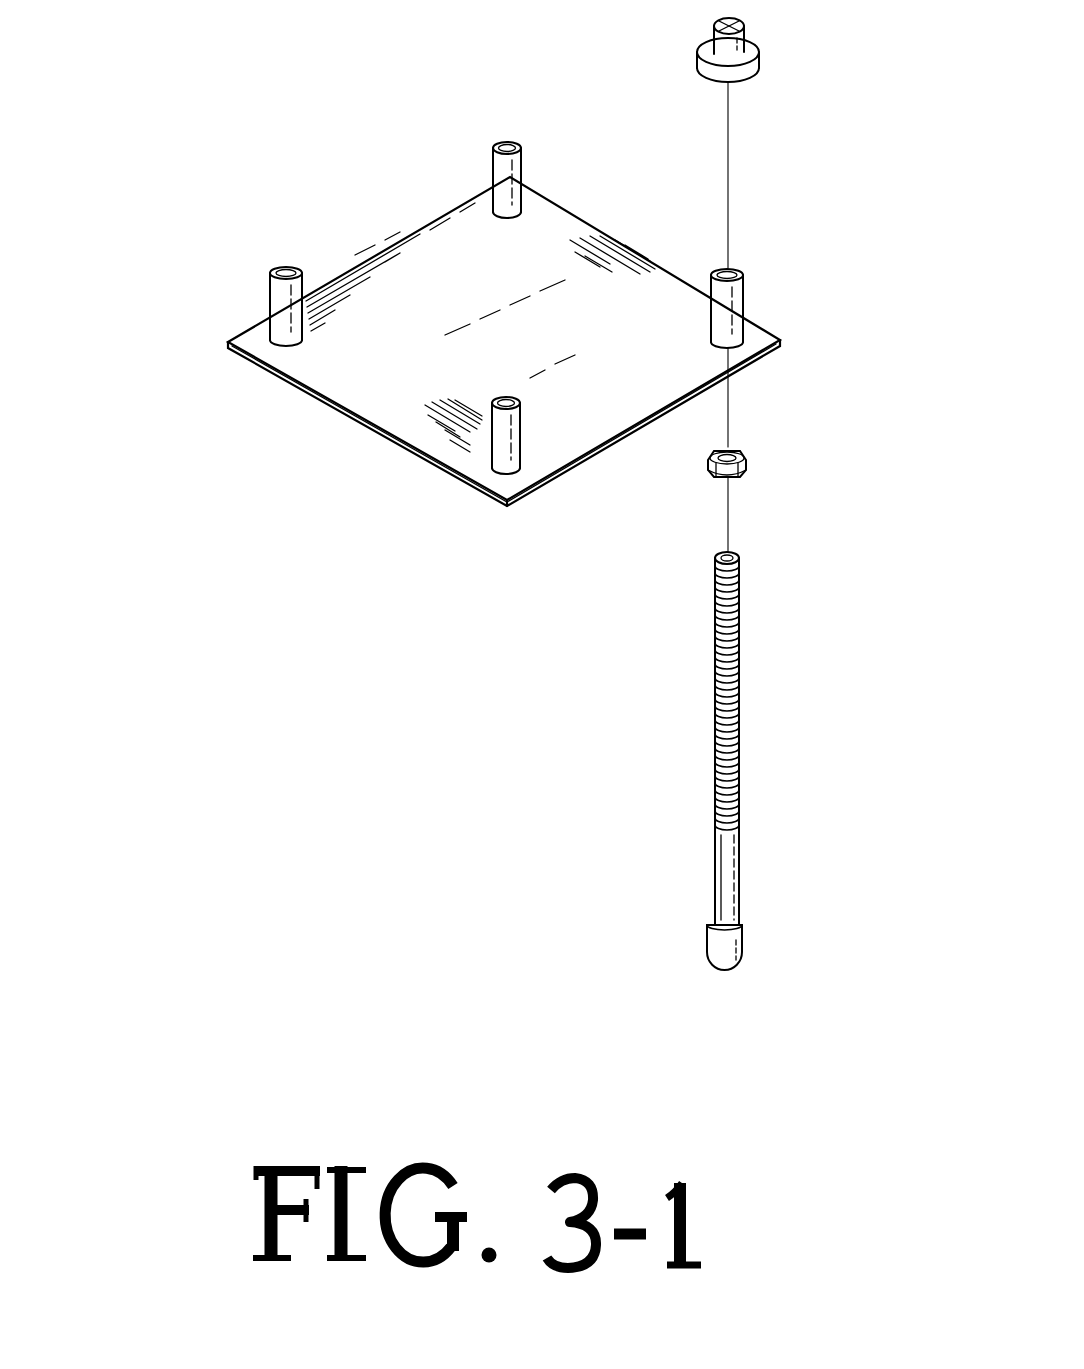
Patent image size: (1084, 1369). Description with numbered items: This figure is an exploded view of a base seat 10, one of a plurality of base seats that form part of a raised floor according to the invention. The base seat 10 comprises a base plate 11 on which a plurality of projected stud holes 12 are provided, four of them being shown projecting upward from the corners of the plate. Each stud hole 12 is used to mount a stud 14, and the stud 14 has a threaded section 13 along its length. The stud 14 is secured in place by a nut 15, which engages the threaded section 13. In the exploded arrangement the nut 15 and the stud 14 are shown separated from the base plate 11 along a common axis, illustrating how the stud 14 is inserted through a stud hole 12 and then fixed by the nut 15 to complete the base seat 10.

The base seat 10 is at (672, 240).
The base plate 11 is at (413, 403).
The projected stud hole 12 is at (290, 298).
The threaded section 13 is at (738, 718).
The stud 14 is at (720, 856).
The nut 15 is at (745, 466).